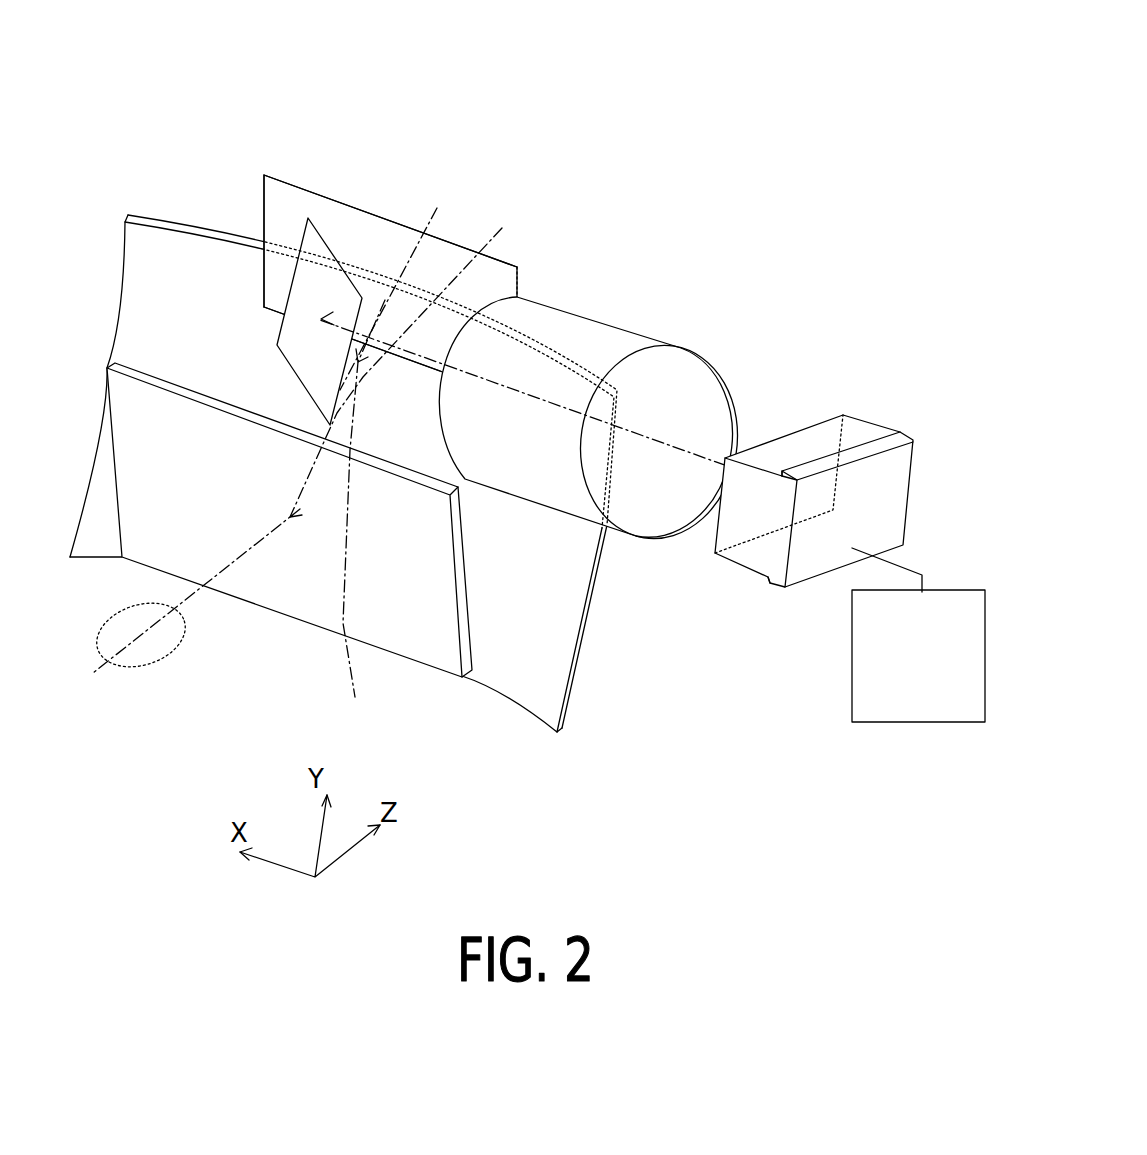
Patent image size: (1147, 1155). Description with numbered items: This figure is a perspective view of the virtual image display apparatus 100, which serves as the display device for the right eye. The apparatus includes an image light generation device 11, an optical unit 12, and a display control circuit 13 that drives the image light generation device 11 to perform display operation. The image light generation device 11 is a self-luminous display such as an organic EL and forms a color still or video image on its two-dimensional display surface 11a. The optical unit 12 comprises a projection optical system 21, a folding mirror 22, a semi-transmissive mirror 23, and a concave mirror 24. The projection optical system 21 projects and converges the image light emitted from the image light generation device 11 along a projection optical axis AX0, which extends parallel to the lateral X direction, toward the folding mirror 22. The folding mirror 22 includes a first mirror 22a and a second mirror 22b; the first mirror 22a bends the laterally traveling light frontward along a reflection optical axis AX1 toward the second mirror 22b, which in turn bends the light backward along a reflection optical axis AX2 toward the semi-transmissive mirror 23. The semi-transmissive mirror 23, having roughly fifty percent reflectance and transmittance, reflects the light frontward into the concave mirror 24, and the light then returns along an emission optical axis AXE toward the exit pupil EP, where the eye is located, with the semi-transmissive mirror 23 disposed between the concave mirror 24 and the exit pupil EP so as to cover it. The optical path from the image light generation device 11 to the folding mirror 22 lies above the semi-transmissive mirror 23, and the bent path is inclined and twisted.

The virtual image display apparatus 100 is at (937, 121).
The image light generation device 11 is at (858, 415).
The display surface 11a is at (780, 470).
The optical unit 12 is at (495, 200).
The display control circuit 13 is at (918, 708).
The projection optical system 21 is at (598, 330).
The folding mirror 22 is at (250, 215).
The first mirror 22a is at (282, 345).
The second mirror 22b is at (367, 232).
The semi-transmissive mirror 23 is at (262, 583).
The concave mirror 24 is at (555, 594).
The projection optical axis AX0 is at (655, 441).
The reflection optical axis AX1 is at (403, 282).
The reflection optical axis AX2 is at (329, 441).
The emission optical axis AXE is at (357, 517).
The exit pupil EP is at (143, 668).